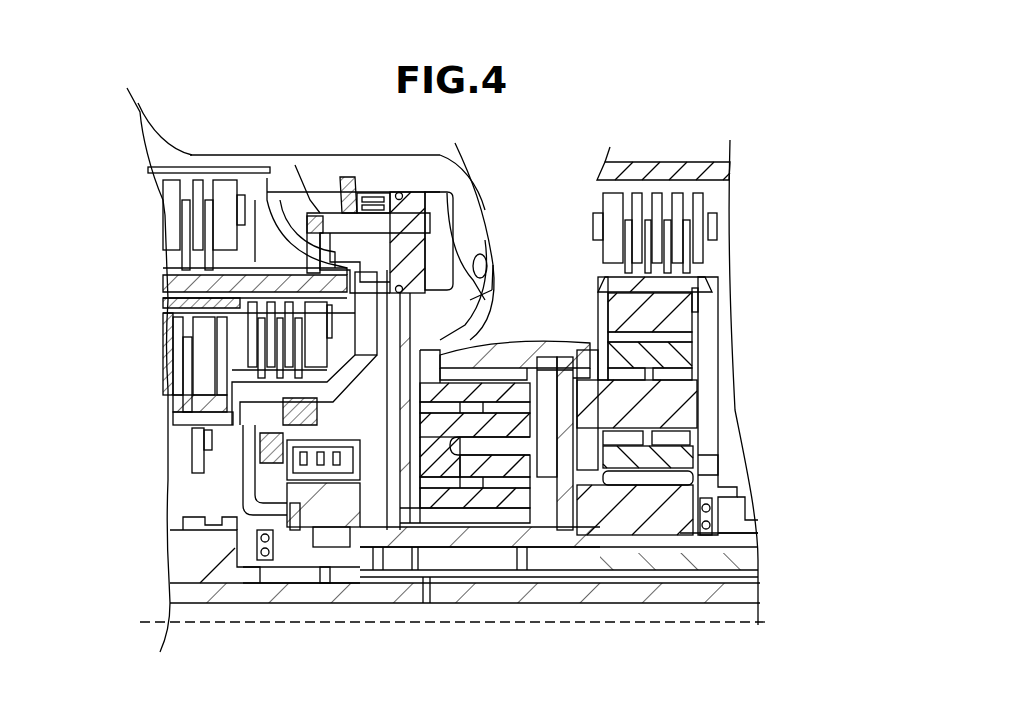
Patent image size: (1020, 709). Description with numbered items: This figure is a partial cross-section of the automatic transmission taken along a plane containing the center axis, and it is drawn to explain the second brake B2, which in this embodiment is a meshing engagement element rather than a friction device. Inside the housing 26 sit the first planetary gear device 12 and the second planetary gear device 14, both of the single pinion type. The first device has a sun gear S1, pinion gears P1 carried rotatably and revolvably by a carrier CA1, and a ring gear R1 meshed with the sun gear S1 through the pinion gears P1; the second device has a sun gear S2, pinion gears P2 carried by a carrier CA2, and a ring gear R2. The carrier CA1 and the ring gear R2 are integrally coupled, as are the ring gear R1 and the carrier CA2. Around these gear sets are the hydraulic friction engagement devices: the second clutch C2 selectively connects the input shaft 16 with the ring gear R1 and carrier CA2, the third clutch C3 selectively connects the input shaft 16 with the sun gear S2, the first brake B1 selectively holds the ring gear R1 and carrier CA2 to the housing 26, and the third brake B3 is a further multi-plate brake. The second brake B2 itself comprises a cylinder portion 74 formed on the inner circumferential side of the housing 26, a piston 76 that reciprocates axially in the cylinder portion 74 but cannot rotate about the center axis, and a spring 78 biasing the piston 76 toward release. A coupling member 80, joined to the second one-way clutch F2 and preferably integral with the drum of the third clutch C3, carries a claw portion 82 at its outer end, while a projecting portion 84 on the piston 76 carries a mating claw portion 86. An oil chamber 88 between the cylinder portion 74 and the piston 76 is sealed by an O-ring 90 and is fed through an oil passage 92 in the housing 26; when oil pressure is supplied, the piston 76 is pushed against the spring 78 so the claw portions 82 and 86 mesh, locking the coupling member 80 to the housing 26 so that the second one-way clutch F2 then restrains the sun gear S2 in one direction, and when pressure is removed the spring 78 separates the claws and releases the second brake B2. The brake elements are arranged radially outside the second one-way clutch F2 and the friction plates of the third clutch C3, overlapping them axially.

The housing 26 is at (210, 160).
The claw portion 82 is at (300, 165).
The coupling member 80 is at (262, 205).
The projecting portion 84 is at (333, 215).
The claw portion 86 is at (349, 177).
The spring 78 is at (388, 190).
The O-ring 90 is at (402, 193).
The second brake B2 is at (487, 189).
The piston 76 is at (455, 210).
The first brake B1 is at (596, 206).
The third brake B3 is at (158, 213).
The oil chamber 88 is at (445, 217).
The oil passage 92 is at (472, 272).
The cylinder portion 74 is at (488, 305).
The ring gear R2 is at (503, 350).
The ring gear R1 is at (680, 313).
The third clutch C3 is at (238, 342).
The pinion gears P1 is at (683, 357).
The second clutch C2 is at (170, 359).
The carrier CA1 is at (697, 398).
The second one-way clutch F2 is at (268, 450).
The sun gear S1 is at (717, 478).
The carrier CA2 is at (403, 470).
The second planetary gear device 14 is at (457, 533).
The sun gear S2 is at (485, 533).
The pinion gears P2 is at (507, 503).
The first planetary gear device 12 is at (653, 553).
The input shaft 16 is at (733, 593).